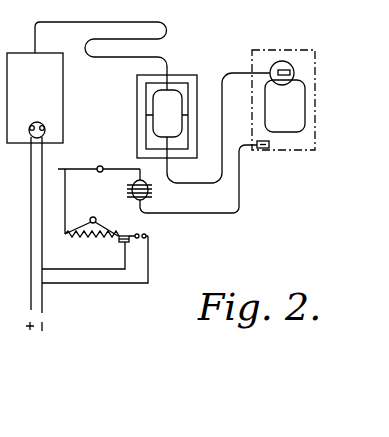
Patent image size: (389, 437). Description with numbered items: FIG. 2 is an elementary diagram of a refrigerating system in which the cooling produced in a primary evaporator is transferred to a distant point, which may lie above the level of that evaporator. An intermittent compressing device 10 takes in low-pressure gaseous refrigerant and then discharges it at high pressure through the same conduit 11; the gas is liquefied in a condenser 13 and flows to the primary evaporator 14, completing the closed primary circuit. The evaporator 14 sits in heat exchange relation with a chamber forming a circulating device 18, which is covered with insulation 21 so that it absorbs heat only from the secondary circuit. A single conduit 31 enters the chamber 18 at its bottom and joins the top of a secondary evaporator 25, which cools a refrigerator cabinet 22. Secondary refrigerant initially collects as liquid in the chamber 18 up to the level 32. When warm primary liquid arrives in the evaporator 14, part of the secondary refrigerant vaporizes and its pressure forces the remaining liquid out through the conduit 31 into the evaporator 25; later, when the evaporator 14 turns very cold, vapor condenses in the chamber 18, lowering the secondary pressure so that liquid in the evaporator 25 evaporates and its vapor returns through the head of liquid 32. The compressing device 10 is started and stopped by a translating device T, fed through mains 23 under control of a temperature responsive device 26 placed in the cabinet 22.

The compressing device 10 is at (35, 98).
The conduit 11 is at (78, 22).
The condenser 13 is at (166, 33).
The primary evaporator 14 is at (168, 100).
The circulating device chamber 18 is at (184, 90).
The insulation 21 is at (138, 126).
The refrigerator cabinet 22 is at (315, 148).
The mains 23 is at (98, 226).
The secondary evaporator 25 is at (305, 100).
The temperature responsive device 26 is at (266, 150).
The conduit 31 is at (232, 71).
The liquid level 32 is at (150, 114).
The translating device T is at (36, 121).